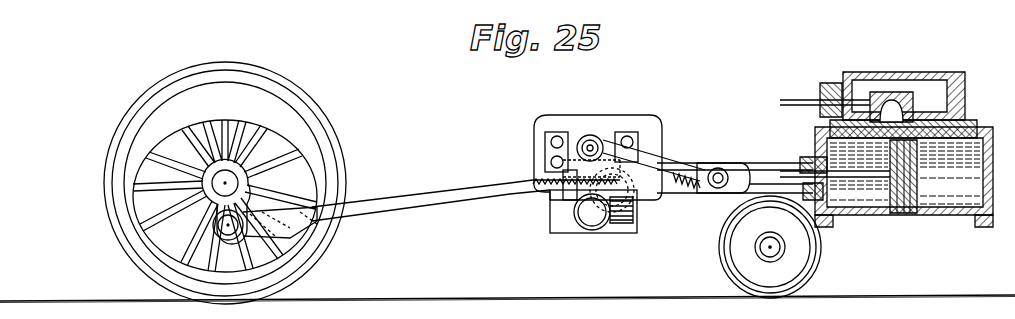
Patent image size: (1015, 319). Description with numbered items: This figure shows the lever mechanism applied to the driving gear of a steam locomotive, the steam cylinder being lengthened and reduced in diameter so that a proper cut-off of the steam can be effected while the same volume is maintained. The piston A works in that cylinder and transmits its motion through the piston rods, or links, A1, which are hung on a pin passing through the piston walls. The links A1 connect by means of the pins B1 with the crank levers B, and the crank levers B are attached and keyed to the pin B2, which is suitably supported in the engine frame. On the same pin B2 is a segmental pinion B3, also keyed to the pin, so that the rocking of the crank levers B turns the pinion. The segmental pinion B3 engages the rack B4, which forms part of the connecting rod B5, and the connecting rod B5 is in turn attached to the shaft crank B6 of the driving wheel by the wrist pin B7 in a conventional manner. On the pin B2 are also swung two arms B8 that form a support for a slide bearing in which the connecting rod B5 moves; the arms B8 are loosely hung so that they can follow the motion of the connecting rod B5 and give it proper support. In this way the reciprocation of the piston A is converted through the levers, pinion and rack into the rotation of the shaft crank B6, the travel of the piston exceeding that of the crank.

The piston A is at (933, 200).
The piston rods, or links A1 is at (673, 192).
The crank levers B is at (547, 203).
The pins B1 is at (592, 146).
The pin B2 is at (594, 217).
The segmental pinion B3 is at (624, 224).
The rack B4 is at (533, 174).
The connecting rod B5 is at (401, 203).
The shaft crank B6 is at (226, 183).
The wrist pin B7 is at (233, 227).
The arms B8 is at (634, 205).